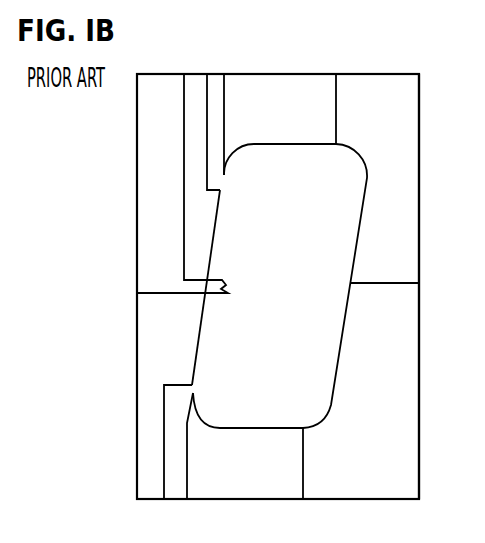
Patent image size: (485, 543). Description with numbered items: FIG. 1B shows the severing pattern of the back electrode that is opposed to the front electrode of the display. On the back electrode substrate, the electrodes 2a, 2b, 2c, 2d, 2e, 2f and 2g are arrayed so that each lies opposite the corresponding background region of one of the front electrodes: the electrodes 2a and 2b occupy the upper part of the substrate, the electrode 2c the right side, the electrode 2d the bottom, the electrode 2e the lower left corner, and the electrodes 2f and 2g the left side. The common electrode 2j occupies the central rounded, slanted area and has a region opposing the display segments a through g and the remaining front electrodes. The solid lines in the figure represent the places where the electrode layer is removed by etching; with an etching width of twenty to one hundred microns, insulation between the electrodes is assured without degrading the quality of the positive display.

The back electrode 2a is at (286, 77).
The back electrode 2b is at (377, 77).
The back electrode 2c is at (413, 374).
The back electrode 2d is at (247, 500).
The back electrode 2e is at (153, 500).
The back electrode 2f is at (195, 77).
The back electrode 2g is at (158, 77).
The common electrode 2j is at (215, 77).